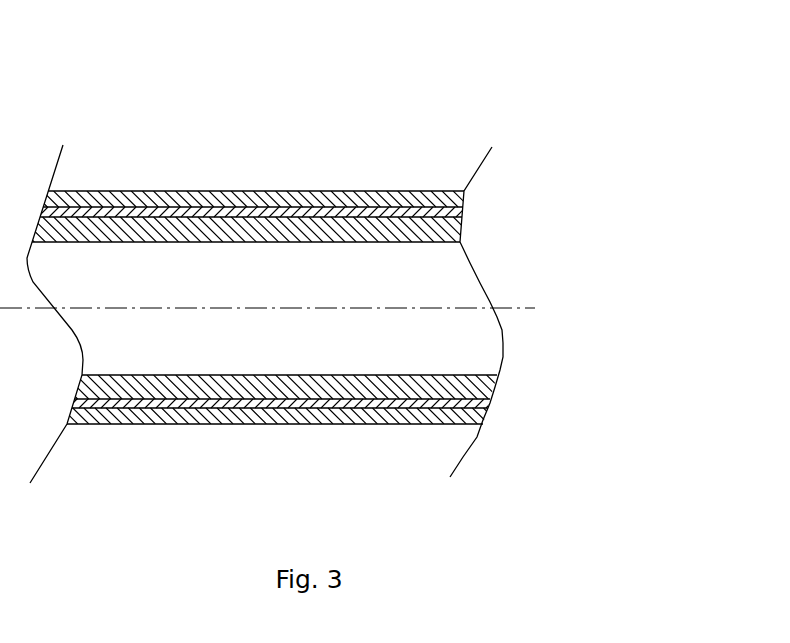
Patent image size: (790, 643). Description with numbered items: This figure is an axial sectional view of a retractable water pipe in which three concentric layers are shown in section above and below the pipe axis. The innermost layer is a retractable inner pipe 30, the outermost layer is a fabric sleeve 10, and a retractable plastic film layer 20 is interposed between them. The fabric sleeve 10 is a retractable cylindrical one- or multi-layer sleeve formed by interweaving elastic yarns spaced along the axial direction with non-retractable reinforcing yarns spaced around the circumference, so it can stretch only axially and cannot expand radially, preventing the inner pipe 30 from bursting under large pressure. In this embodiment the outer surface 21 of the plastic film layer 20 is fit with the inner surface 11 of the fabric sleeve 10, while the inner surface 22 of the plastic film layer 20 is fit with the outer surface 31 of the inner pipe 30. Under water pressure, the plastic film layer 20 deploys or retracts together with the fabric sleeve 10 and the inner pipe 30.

The fabric sleeve 10 is at (105, 200).
The inner surface of the fabric sleeve 11 is at (176, 208).
The plastic film layer 20 is at (246, 196).
The outer surface of the plastic film layer 21 is at (285, 207).
The inner surface of the plastic film layer 22 is at (320, 220).
The inner pipe 30 is at (379, 222).
The outer surface of the inner pipe 31 is at (432, 217).